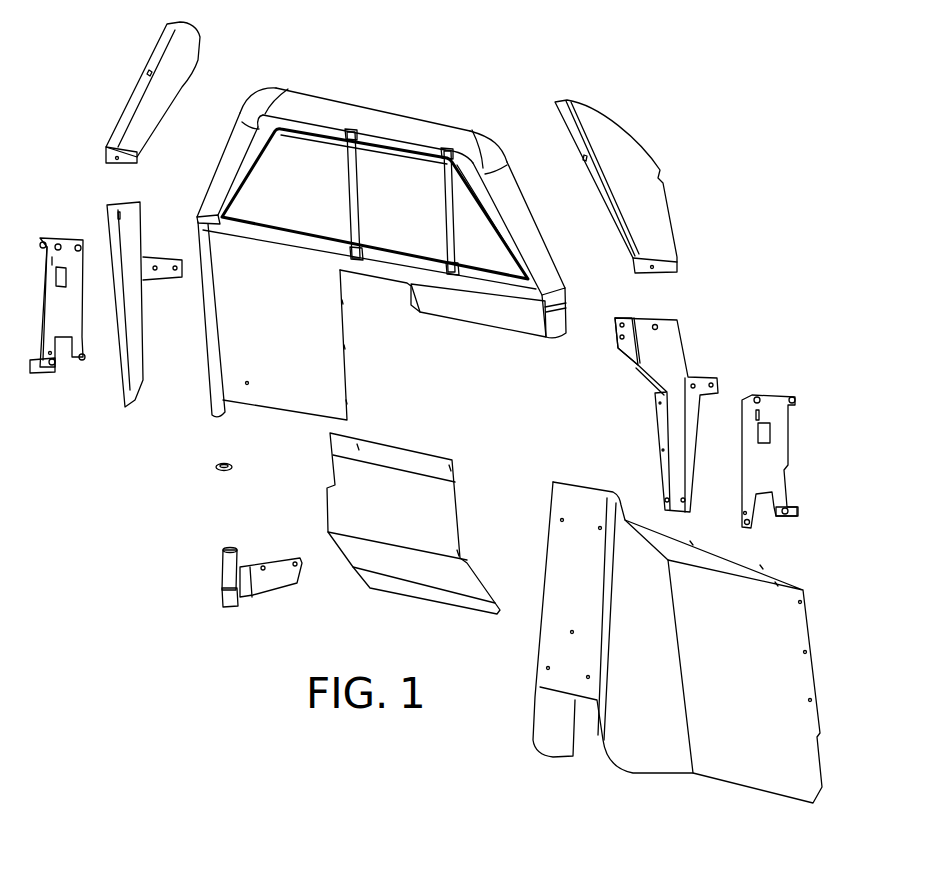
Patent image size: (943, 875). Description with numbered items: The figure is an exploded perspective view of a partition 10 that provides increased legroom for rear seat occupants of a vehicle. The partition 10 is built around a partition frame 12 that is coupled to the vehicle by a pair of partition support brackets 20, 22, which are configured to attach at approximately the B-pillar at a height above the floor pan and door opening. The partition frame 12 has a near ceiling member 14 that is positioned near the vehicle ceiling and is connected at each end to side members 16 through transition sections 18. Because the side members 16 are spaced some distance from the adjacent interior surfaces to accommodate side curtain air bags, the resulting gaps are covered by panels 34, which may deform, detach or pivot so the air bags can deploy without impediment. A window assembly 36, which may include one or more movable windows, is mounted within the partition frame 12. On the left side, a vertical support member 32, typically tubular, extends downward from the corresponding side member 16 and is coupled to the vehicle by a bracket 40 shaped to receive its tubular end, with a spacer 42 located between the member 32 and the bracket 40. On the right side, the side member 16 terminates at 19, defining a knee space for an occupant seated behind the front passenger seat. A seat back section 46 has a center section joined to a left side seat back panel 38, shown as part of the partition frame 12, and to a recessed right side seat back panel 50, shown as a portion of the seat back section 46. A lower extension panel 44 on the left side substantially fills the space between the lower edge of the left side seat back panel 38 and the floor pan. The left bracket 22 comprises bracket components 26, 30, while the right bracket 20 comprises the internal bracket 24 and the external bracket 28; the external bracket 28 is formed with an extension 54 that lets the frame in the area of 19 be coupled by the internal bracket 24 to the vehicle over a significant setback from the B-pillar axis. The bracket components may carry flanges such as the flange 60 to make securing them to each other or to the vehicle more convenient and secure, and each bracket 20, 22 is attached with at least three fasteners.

The partition 10 is at (697, 113).
The partition frame 12 is at (354, 105).
The near ceiling member 14 is at (420, 122).
The side member 16 is at (214, 173).
The transition section 18 is at (268, 92).
The termination of side member 19 is at (568, 324).
The partition support bracket 20 is at (630, 290).
The partition support bracket 22 is at (153, 182).
The internal bracket 24 is at (787, 468).
The bracket component 26 is at (42, 327).
The external bracket 28 is at (658, 462).
The bracket 30 is at (143, 327).
The vertical support member 32 is at (204, 352).
The panel 34 is at (128, 104).
The window assembly 36 is at (403, 231).
The left side seat back panel 38 is at (346, 335).
The bracket 40 is at (242, 600).
The spacer 42 is at (233, 465).
The lower extension panel 44 is at (462, 531).
The seat back section 46 is at (648, 775).
The recessed right side seat back panel 50 is at (763, 688).
The extension 54 is at (617, 350).
The flange 60 is at (797, 515).